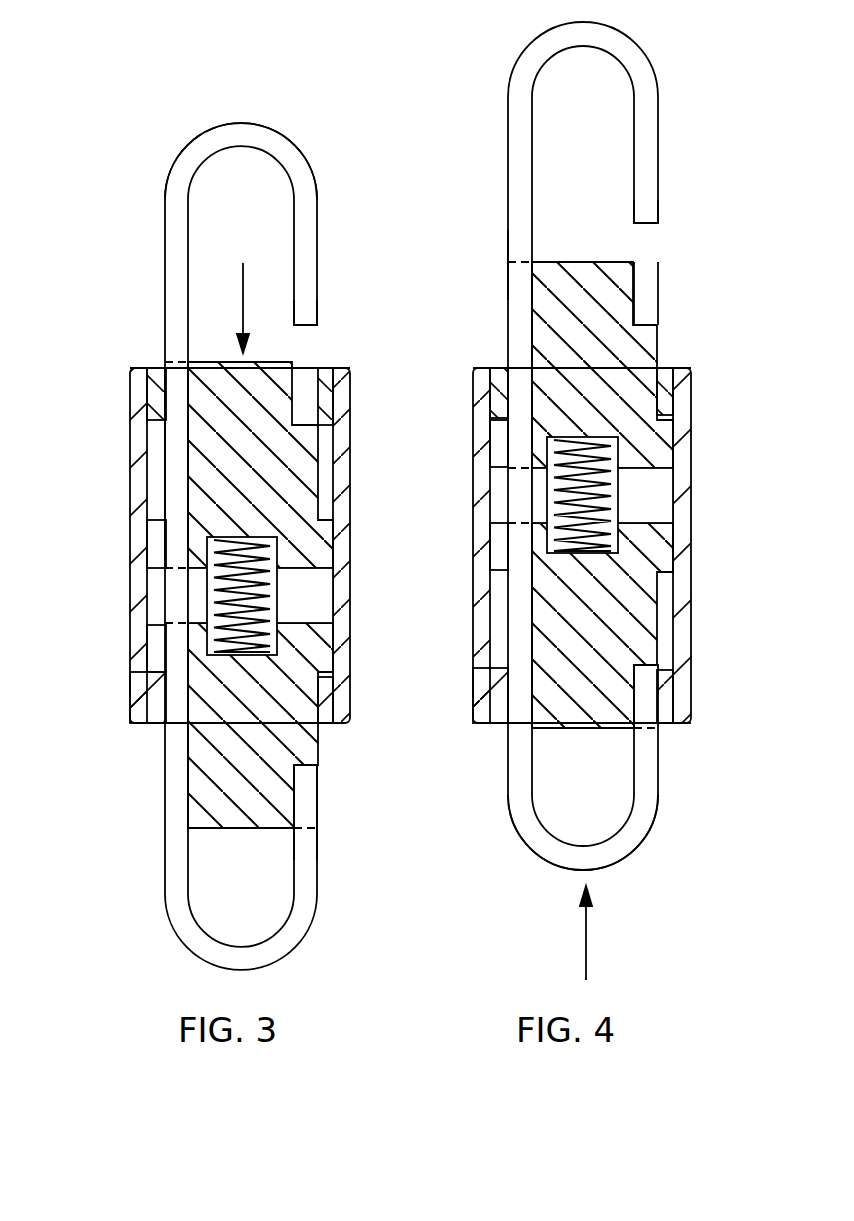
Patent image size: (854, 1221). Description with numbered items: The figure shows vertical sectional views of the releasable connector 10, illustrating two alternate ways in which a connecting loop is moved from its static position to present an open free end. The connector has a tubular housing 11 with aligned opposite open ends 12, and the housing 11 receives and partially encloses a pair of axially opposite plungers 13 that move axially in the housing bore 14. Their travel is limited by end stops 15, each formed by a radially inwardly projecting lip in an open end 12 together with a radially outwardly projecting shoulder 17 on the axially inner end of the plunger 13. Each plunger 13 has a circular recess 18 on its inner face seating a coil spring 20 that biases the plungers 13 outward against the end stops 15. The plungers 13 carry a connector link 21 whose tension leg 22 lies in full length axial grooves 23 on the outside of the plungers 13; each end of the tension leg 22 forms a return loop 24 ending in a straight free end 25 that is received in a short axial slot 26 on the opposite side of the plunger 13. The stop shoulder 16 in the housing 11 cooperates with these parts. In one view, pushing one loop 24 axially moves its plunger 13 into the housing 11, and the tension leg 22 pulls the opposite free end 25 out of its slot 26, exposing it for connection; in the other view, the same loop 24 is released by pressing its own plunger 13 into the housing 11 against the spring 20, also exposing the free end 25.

In FIG. 3, the releasable connector 10 is at (100, 346).
In FIG. 4, the releasable connector 10 is at (704, 314).
In FIG. 3, the tubular housing 11 is at (138, 487).
In FIG. 4, the tubular housing 11 is at (690, 604).
In FIG. 3, the open ends 12 is at (165, 702).
In FIG. 4, the open ends 12 is at (515, 385).
In FIG. 3, the plungers 13 is at (280, 494).
In FIG. 4, the plungers 13 is at (597, 282).
In FIG. 3, the housing bore 14 is at (150, 590).
In FIG. 4, the housing bore 14 is at (493, 640).
In FIG. 3, the end stops 15 is at (165, 395).
In FIG. 4, the end stops 15 is at (690, 728).
In FIG. 3, the stop shoulder 16 is at (318, 386).
In FIG. 4, the stop shoulder 16 is at (665, 391).
In FIG. 3, the shoulder 17 is at (322, 679).
In FIG. 4, the shoulder 17 is at (663, 417).
In FIG. 3, the circular recess 18 is at (262, 541).
In FIG. 4, the circular recess 18 is at (545, 543).
In FIG. 3, the coil spring 20 is at (265, 601).
In FIG. 4, the coil spring 20 is at (607, 501).
In FIG. 3, the connector link 21 is at (165, 780).
In FIG. 4, the connector link 21 is at (500, 196).
In FIG. 3, the tension leg 22 is at (180, 490).
In FIG. 4, the tension leg 22 is at (515, 236).
In FIG. 3, the axial grooves 23 is at (187, 434).
In FIG. 4, the axial grooves 23 is at (528, 645).
In FIG. 3, the return loop 24 is at (288, 150).
In FIG. 4, the return loop 24 is at (620, 850).
In FIG. 3, the free end 25 is at (306, 313).
In FIG. 4, the free end 25 is at (645, 212).
In FIG. 3, the axial slots 26 is at (310, 795).
In FIG. 4, the axial slots 26 is at (645, 290).